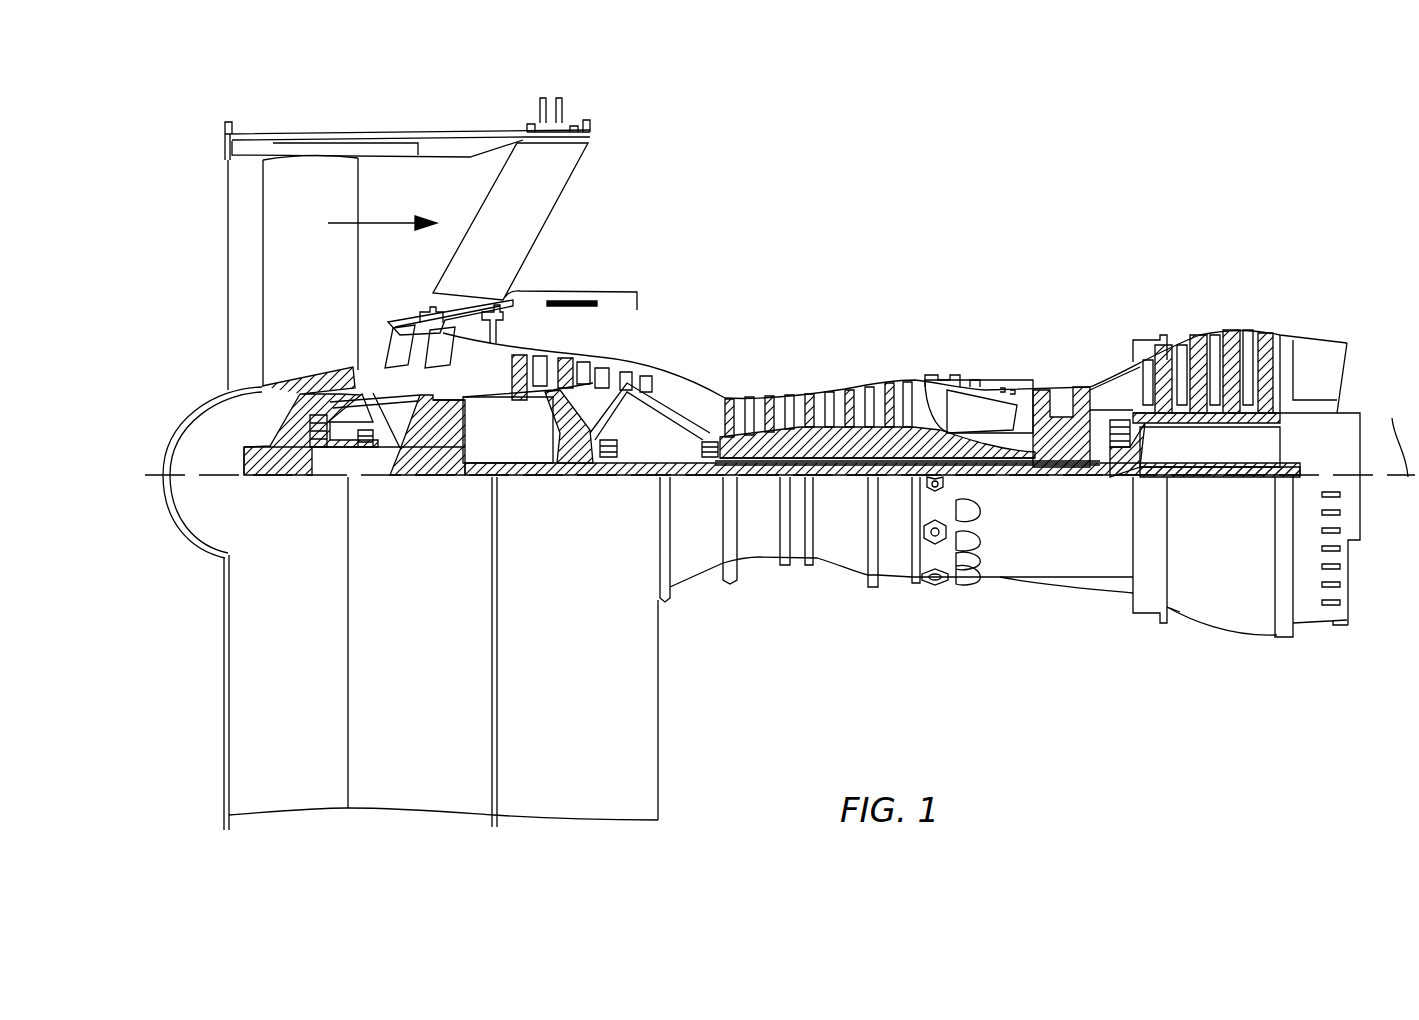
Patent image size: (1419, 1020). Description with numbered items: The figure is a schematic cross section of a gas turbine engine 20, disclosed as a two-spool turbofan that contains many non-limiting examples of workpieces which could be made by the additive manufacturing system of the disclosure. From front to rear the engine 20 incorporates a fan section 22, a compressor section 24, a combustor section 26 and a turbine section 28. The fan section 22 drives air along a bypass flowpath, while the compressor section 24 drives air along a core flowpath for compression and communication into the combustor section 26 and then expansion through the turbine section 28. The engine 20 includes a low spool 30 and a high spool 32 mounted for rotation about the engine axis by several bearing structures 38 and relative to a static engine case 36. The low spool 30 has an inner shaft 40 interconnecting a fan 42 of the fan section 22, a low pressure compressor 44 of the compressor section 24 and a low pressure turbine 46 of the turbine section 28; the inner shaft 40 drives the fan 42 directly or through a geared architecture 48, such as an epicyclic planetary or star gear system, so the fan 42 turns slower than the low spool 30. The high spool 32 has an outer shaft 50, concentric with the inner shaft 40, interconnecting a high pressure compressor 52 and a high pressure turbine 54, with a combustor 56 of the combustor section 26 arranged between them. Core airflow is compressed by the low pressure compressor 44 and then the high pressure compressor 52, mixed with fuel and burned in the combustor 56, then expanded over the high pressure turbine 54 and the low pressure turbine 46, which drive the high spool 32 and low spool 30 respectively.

The gas turbine engine 20 is at (1018, 177).
The fan section 22 is at (218, 107).
The compressor section 24 is at (503, 270).
The combustor section 26 is at (923, 270).
The turbine section 28 is at (1283, 270).
The low spool 30 is at (847, 478).
The high spool 32 is at (892, 437).
The static engine case 36 is at (898, 577).
The bearing structures 38 is at (320, 447).
The inner shaft 40 is at (687, 479).
The fan 42 is at (292, 297).
The low pressure compressor 44 is at (580, 362).
The low pressure turbine 46 is at (1213, 333).
The geared architecture 48 is at (450, 450).
The outer shaft 50 is at (977, 463).
The high pressure compressor 52 is at (830, 440).
The high pressure turbine 54 is at (1060, 380).
The combustor 56 is at (983, 410).